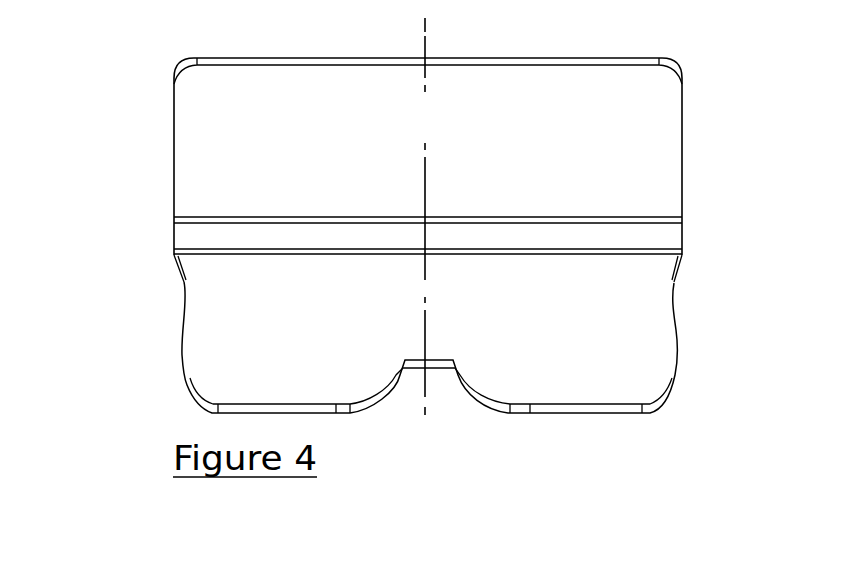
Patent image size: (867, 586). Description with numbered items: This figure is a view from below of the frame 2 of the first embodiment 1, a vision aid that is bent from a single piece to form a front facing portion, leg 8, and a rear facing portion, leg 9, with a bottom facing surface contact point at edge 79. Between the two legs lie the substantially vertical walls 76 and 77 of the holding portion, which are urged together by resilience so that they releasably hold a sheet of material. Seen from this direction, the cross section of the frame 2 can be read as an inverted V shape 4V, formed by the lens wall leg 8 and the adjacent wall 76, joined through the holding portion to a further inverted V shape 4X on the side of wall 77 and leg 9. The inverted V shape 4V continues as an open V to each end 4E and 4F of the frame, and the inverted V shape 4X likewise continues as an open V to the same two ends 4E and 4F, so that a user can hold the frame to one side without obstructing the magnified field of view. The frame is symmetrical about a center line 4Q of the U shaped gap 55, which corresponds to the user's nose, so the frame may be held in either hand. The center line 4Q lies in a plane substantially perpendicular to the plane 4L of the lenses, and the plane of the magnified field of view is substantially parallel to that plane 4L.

The first embodiment 1 is at (429, 267).
The frame 2 is at (441, 156).
The end 4E is at (170, 264).
The end 4F is at (687, 268).
The plane of the lenses 4L is at (357, 385).
The center line 4Q is at (432, 322).
The inverted V shape 4V is at (345, 279).
The inverted V shape 4X is at (368, 191).
The leg 8 is at (218, 274).
The leg 9 is at (650, 126).
The U shaped gap 55 is at (440, 408).
The wall 76 is at (627, 262).
The wall 77 is at (636, 217).
The edge 79 is at (548, 68).